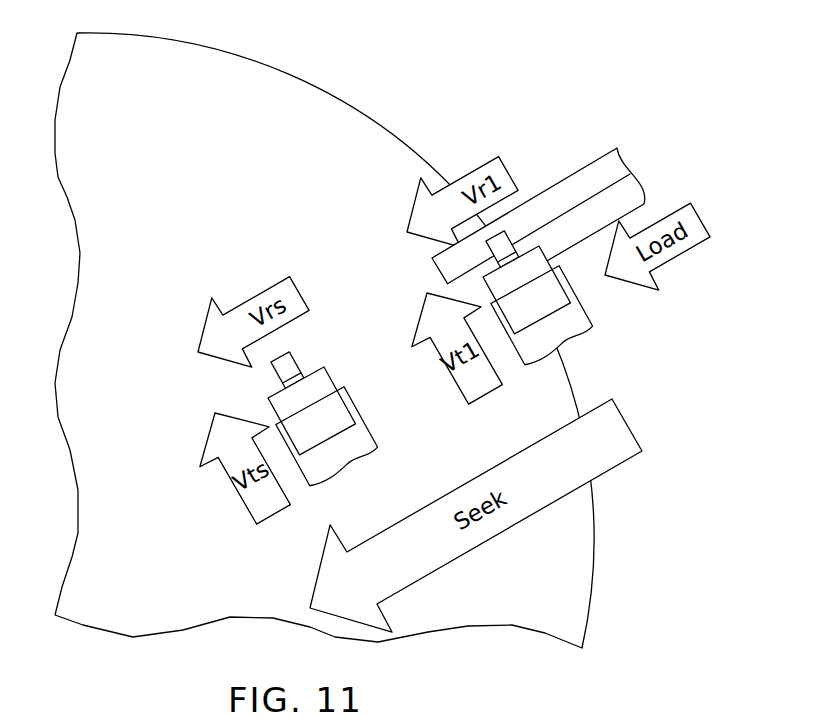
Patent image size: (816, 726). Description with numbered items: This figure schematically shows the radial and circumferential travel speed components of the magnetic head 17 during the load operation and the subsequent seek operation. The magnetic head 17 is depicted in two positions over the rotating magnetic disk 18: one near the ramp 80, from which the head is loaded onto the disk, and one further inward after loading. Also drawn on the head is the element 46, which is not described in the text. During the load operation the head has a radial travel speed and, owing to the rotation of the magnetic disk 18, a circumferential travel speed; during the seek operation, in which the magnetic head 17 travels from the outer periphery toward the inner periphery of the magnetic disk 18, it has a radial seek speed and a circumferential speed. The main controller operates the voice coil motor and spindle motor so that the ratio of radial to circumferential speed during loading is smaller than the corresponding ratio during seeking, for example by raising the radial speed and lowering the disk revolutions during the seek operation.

The magnetic disk 18 is at (312, 170).
The ramp 80 is at (597, 166).
The lift tab 46 is at (505, 243).
The magnetic head 17 is at (322, 384).